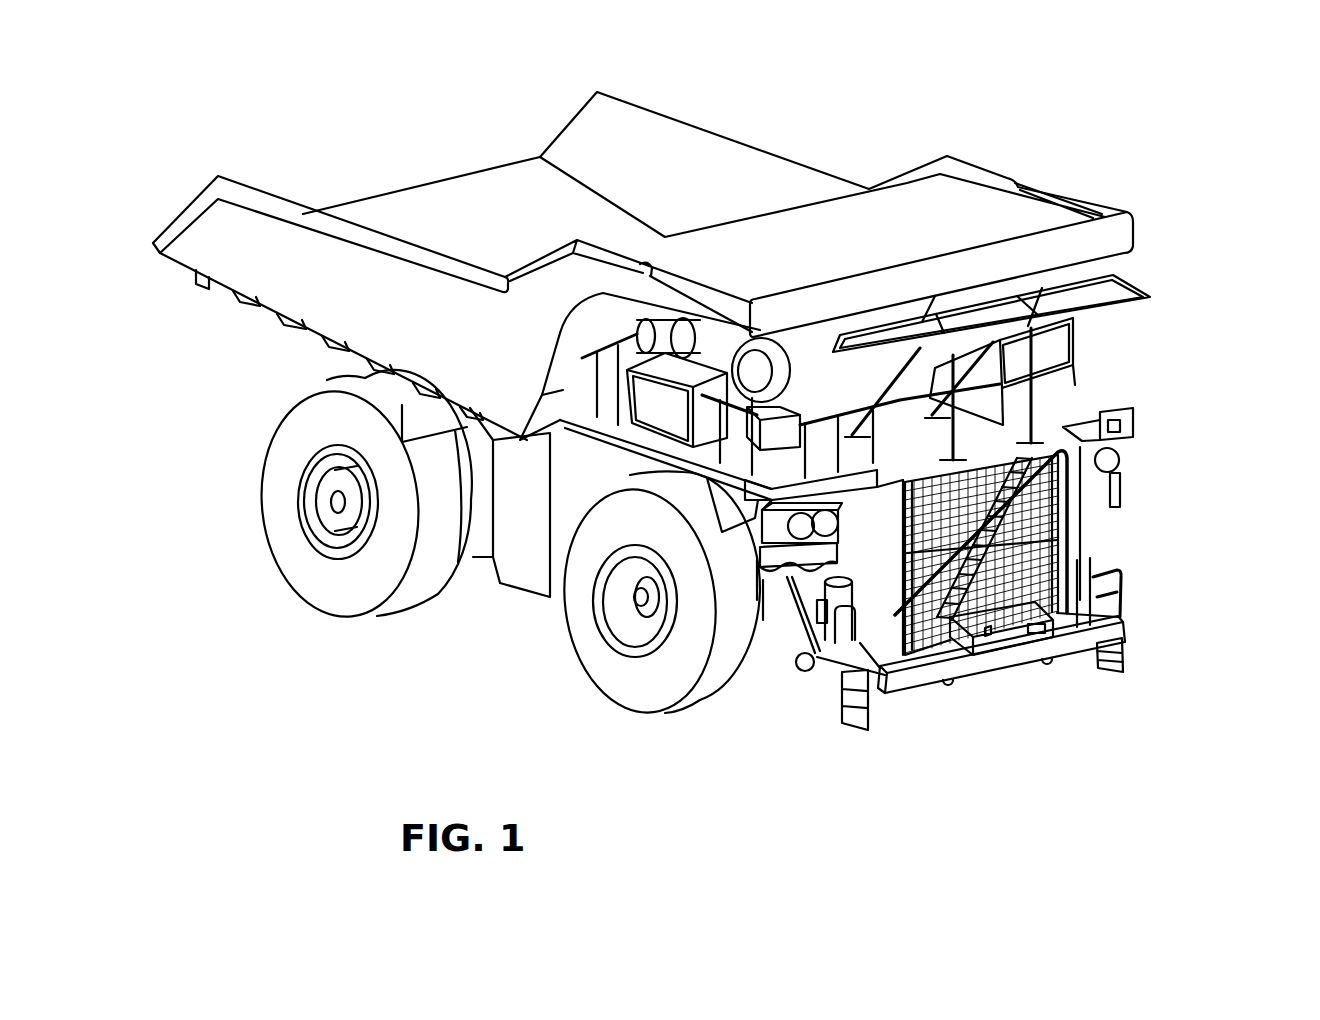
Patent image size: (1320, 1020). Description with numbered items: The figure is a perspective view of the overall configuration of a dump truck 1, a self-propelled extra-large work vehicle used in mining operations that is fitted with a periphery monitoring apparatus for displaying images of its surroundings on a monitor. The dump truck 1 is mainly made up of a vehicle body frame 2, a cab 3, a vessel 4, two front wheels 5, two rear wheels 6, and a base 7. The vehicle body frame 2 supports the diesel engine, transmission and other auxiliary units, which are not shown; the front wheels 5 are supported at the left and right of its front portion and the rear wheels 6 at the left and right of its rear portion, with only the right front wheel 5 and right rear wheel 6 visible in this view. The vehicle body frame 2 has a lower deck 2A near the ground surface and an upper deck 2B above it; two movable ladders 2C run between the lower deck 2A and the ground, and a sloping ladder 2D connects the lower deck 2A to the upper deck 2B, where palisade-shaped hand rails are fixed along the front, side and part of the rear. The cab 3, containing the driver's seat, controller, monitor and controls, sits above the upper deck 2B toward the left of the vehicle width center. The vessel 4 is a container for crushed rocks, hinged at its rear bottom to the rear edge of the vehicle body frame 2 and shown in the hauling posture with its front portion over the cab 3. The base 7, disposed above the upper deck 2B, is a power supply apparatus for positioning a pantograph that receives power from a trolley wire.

The dump truck 1 is at (897, 134).
The vehicle body frame 2 is at (782, 619).
The lower deck 2A is at (1053, 645).
The upper deck 2B is at (1130, 422).
The movable ladders 2C is at (868, 720).
The sloping ladder 2D is at (975, 650).
The cab 3 is at (1053, 346).
The vessel 4 is at (430, 193).
The front wheels 5 is at (638, 697).
The rear wheels 6 is at (333, 600).
The base 7 is at (1168, 294).